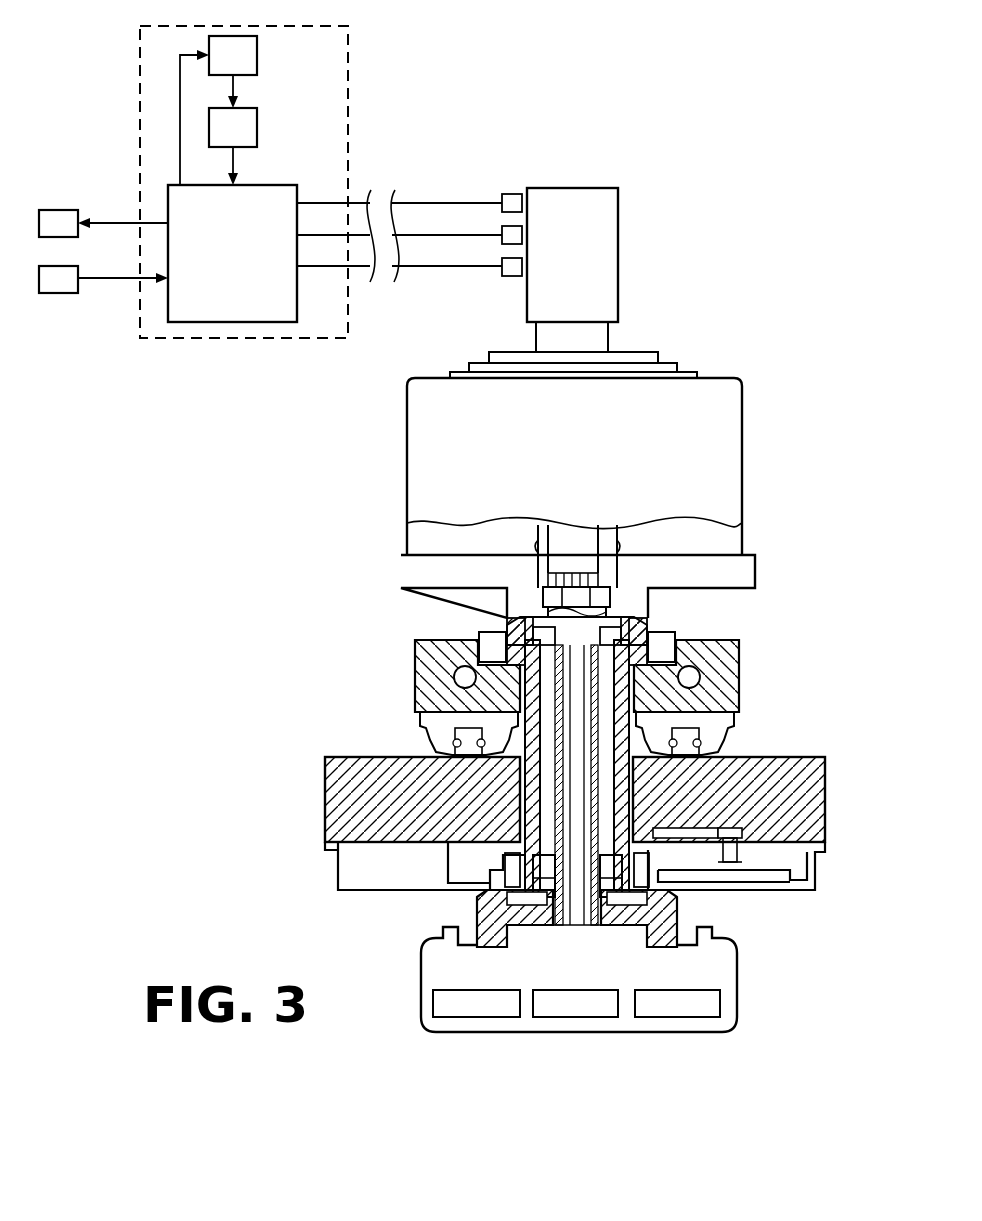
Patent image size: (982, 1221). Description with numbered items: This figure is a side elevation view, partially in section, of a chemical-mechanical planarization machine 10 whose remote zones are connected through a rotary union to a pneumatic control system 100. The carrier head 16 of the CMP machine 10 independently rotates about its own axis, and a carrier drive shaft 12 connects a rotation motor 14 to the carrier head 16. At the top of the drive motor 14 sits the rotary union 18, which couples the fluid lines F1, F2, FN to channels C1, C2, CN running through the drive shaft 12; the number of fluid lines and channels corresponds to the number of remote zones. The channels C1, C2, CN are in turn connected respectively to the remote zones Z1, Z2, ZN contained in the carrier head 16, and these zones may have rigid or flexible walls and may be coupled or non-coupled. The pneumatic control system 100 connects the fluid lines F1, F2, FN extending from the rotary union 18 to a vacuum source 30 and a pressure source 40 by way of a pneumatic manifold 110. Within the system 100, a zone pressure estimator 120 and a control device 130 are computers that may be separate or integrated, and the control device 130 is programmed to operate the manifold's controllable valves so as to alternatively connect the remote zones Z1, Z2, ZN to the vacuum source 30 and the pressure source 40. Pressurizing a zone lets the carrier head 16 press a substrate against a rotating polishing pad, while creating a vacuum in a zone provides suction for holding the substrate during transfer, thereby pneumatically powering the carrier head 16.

The chemical-mechanical planarization (CMP) machine 10 is at (355, 523).
The carrier drive shaft 12 is at (590, 618).
The rotation motor 14 is at (724, 464).
The carrier head 16 is at (770, 990).
The rotary union 18 is at (618, 257).
The vacuum source 30 is at (52, 210).
The pressure source 40 is at (50, 293).
The pneumatic control system 100 is at (389, 98).
The pneumatic manifold 110 is at (227, 322).
The zone pressure estimator 120 is at (257, 56).
The control device 130 is at (257, 128).
The fluid line F1 is at (438, 203).
The fluid line F2 is at (438, 235).
The fluid line FN is at (438, 266).
The channel C1 is at (545, 927).
The channel C2 is at (577, 927).
The channel CN is at (603, 927).
The remote zone Z1 is at (474, 1003).
The remote zone Z2 is at (572, 1003).
The remote zone ZN is at (677, 1003).